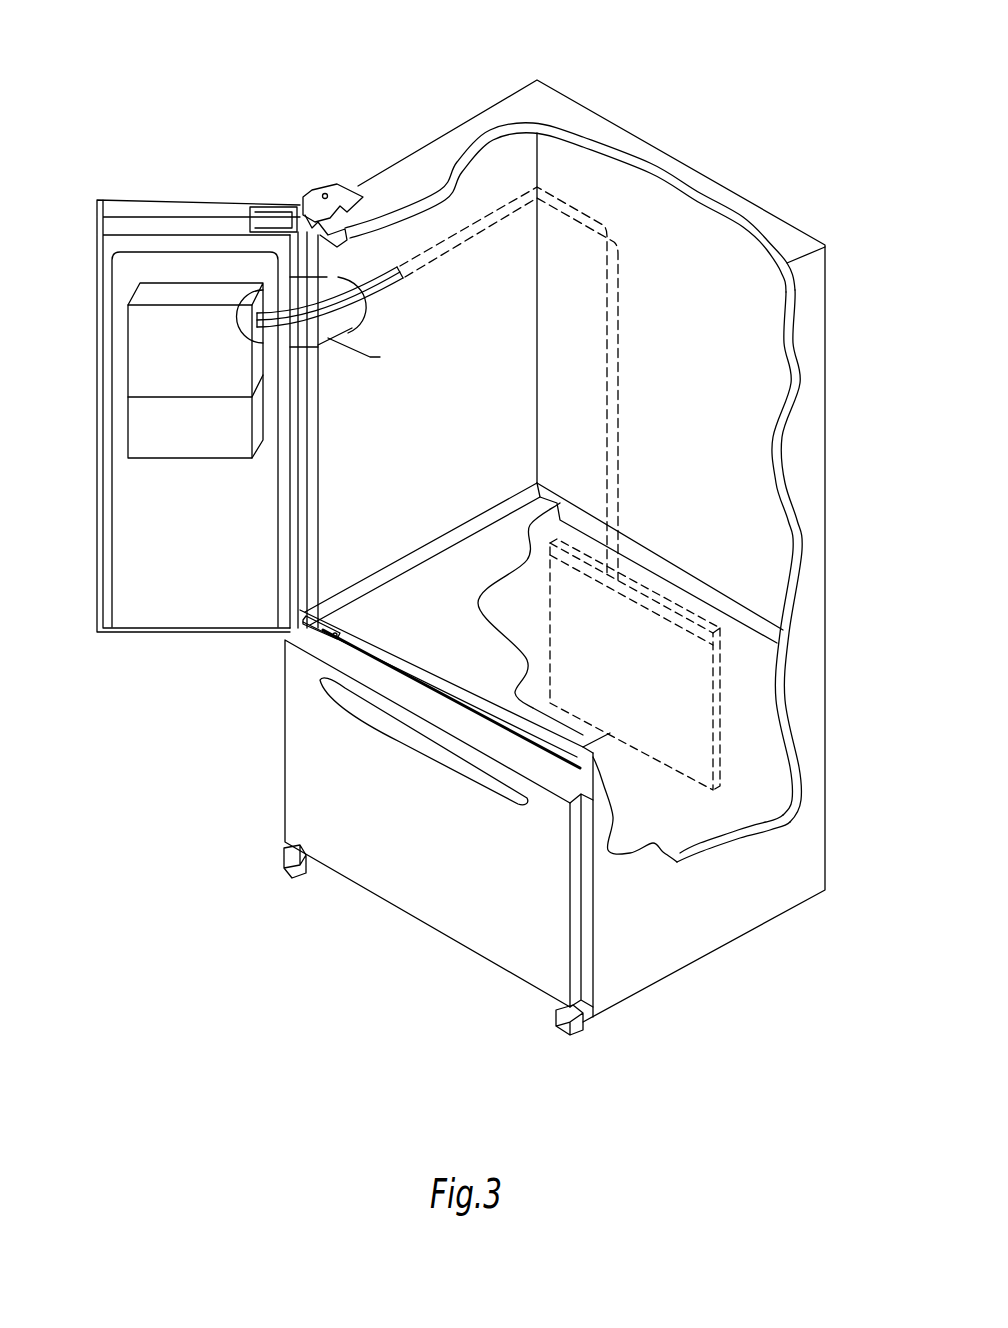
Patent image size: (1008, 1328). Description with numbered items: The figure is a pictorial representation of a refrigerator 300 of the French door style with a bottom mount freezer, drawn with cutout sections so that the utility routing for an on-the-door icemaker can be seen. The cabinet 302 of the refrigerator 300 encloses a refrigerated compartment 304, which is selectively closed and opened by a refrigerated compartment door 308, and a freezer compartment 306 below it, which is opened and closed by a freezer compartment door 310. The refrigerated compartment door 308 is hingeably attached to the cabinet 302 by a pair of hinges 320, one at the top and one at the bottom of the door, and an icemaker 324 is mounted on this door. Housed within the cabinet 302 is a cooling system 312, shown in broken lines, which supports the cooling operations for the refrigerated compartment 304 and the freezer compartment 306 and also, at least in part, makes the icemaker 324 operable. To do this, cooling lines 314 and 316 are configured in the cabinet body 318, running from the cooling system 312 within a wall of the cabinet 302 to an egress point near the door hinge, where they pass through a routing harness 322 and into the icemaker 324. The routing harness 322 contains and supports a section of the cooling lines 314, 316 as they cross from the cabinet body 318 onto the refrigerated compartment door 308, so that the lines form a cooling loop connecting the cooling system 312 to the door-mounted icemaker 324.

The refrigerator 300 is at (420, 78).
The cabinet 302 is at (690, 182).
The refrigerated compartment 304 is at (760, 382).
The freezer compartment 306 is at (662, 828).
The refrigerated compartment door 308 is at (142, 207).
The freezer compartment door 310 is at (293, 746).
The cooling system 312 is at (715, 777).
The cooling line 314 is at (385, 289).
The cooling line 316 is at (376, 280).
The cabinet body 318 is at (706, 373).
The hinges 320 is at (332, 193).
The routing harness 322 is at (263, 343).
The icemaker 324 is at (127, 406).